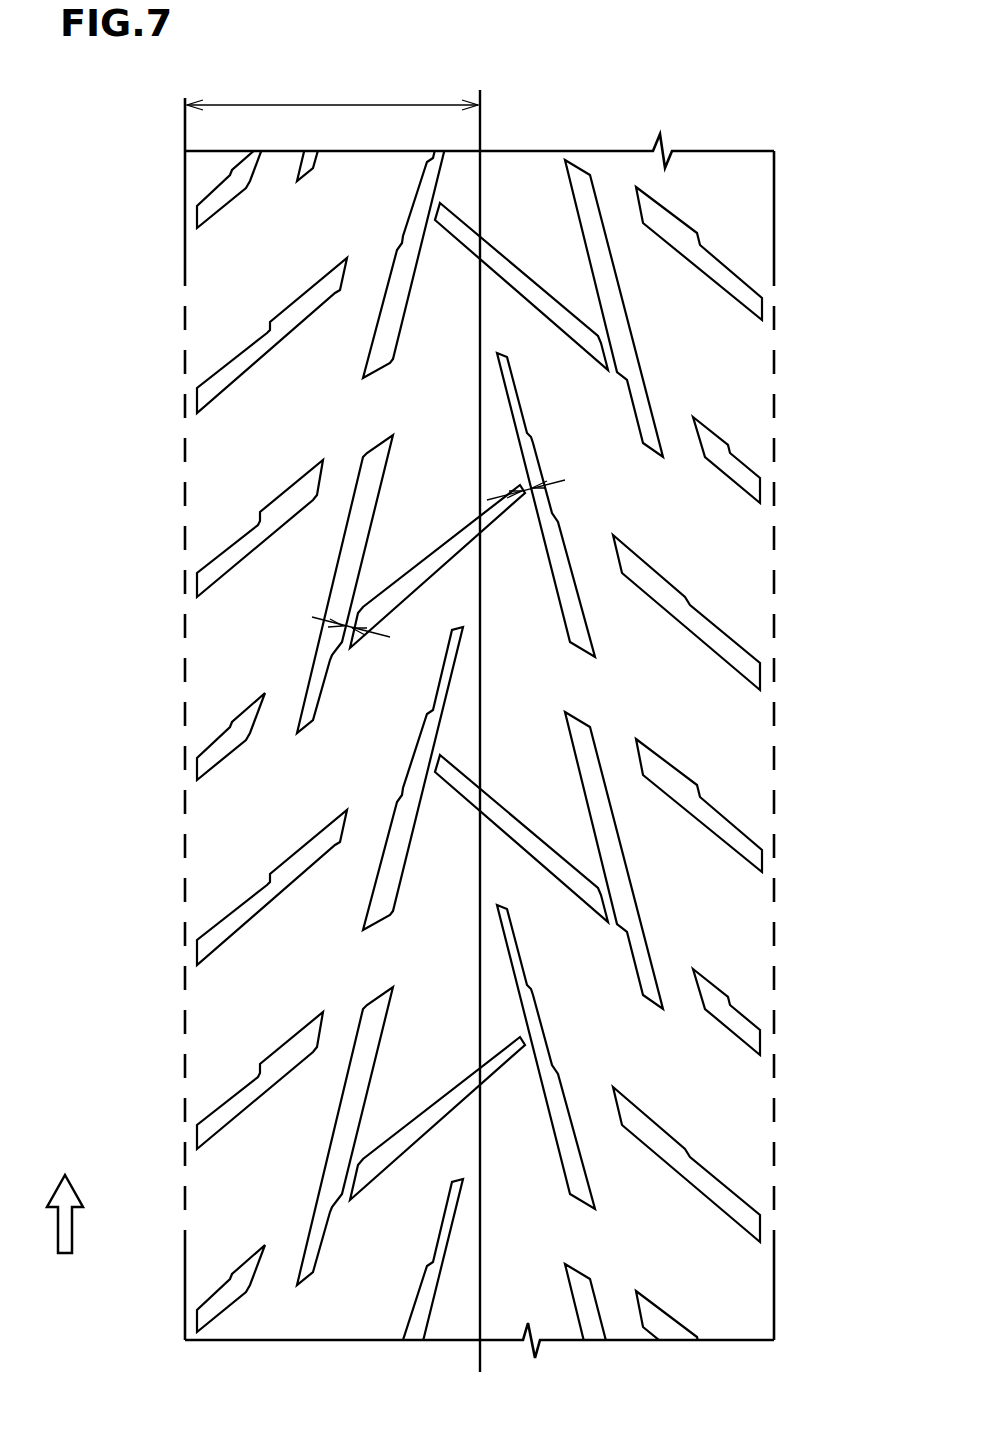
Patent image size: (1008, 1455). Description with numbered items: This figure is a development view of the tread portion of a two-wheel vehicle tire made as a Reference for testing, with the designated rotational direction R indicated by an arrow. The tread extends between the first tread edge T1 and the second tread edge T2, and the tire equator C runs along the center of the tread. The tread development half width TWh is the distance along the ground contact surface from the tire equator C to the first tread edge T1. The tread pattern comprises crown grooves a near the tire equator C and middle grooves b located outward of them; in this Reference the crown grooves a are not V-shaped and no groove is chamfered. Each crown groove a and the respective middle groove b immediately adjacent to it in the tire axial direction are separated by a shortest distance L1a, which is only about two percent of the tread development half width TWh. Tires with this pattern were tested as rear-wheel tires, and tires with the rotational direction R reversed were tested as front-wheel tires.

The crown groove a is at (403, 587).
The middle groove b is at (350, 567).
The shortest distance between crown groove and middle groove L1a is at (345, 647).
The first tread edge T1 is at (184, 162).
The second tread edge T2 is at (775, 182).
The tire equator C is at (481, 131).
The tread development half width TWh is at (332, 92).
The designated rotational direction R is at (65, 1199).